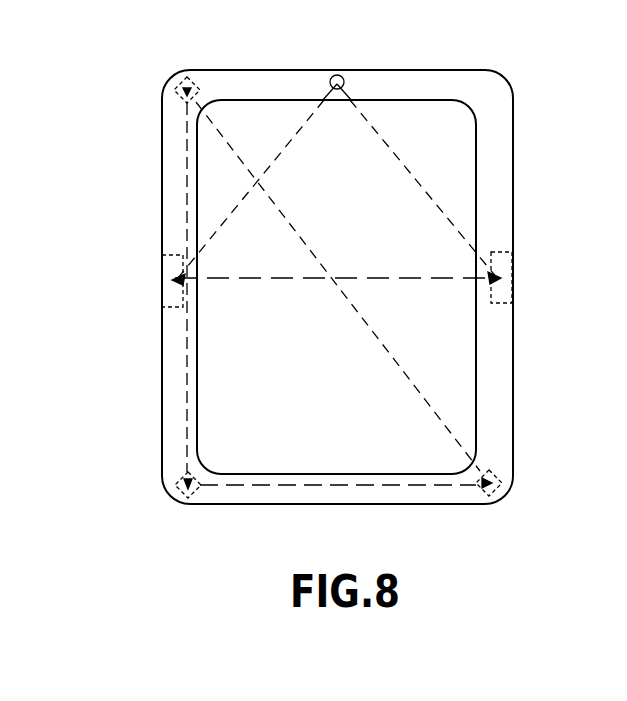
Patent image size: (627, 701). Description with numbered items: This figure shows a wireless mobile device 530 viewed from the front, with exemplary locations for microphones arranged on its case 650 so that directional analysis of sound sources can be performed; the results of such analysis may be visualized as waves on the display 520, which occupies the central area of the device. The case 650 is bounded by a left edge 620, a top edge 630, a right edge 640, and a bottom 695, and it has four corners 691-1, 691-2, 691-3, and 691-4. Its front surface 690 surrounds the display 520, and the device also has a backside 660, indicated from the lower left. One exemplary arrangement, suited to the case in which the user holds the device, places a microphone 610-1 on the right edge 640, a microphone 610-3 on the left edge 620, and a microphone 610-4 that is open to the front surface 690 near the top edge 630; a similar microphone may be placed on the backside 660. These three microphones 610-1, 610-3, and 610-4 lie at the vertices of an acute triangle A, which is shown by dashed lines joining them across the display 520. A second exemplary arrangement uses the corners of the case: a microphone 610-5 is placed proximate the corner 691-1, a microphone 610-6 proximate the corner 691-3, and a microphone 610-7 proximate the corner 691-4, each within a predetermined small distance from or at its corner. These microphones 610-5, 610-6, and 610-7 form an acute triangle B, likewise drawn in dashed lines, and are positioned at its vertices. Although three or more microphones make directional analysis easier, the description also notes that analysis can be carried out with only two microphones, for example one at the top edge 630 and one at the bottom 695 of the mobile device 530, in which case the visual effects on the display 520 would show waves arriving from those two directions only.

The display 520 is at (448, 243).
The mobile device 530 is at (433, 505).
The microphone 610-1 is at (505, 290).
The microphone 610-3 is at (170, 293).
The microphone 610-4 is at (341, 76).
The microphone 610-5 is at (183, 95).
The microphone 610-6 is at (190, 503).
The microphone 610-7 is at (493, 500).
The left edge 620 is at (160, 178).
The top edge 630 is at (455, 70).
The right edge 640 is at (513, 148).
The case 650 is at (503, 393).
The backside 660 is at (140, 414).
The front surface 690 is at (218, 76).
The corner 691-1 is at (178, 75).
The corner 691-2 is at (513, 90).
The corner 691-3 is at (176, 498).
The corner 691-4 is at (510, 488).
The bottom 695 is at (247, 498).
The acute triangle A is at (405, 168).
The acute triangle B is at (368, 322).